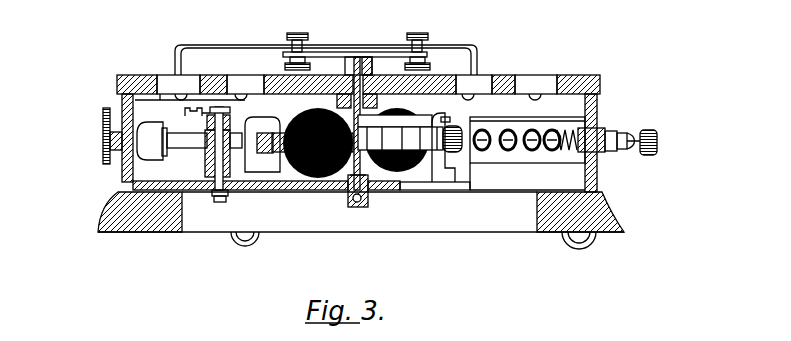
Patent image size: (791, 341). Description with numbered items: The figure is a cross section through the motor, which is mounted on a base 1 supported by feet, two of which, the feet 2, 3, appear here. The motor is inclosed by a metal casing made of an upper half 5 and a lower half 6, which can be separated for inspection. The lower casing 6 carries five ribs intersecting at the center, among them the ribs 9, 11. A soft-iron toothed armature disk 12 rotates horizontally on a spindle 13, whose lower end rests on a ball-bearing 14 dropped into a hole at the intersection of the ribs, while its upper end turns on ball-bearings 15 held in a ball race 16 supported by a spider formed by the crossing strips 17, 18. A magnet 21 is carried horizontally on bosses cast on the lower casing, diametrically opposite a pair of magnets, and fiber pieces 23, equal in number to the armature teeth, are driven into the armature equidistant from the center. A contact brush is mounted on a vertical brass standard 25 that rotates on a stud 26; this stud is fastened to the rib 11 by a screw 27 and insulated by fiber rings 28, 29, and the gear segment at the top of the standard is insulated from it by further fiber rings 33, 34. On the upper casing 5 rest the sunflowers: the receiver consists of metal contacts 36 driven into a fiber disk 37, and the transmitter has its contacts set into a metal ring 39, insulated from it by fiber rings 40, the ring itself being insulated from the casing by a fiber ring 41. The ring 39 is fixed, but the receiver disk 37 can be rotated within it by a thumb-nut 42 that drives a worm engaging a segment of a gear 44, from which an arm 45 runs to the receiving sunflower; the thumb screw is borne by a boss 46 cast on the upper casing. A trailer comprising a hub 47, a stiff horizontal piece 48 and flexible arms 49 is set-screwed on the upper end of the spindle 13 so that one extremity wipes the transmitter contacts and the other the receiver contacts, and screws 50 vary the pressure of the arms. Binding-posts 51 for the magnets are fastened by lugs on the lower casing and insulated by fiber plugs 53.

The base 1 is at (622, 216).
The foot 2 is at (262, 240).
The foot 3 is at (572, 245).
The upper casing half 5 is at (597, 103).
The lower casing half 6 is at (597, 180).
The rib 9 is at (490, 185).
The rib 11 is at (297, 190).
The toothed armature disk 12 is at (435, 143).
The spindle 13 is at (348, 178).
The ball-bearing 14 is at (355, 203).
The ball-bearings 15 is at (378, 103).
The ball race 16 is at (445, 115).
The strip 17 is at (447, 128).
The strip 18 is at (262, 138).
The magnet 21 is at (413, 160).
The fiber pieces 23 is at (264, 153).
The brass standard 25 is at (233, 186).
The stud 26 is at (206, 157).
The screw 27 is at (223, 200).
The fiber ring 28 is at (213, 196).
The fiber ring 29 is at (214, 188).
The fiber ring 33 is at (187, 110).
The fiber ring 34 is at (208, 123).
The metal contacts 36 is at (245, 76).
The fiber disk 37 is at (432, 77).
The metal ring 39 is at (153, 75).
The fiber rings 40 is at (162, 75).
The fiber ring 41 is at (127, 74).
The thumb-nut 42 is at (103, 124).
The segment of a gear 44 is at (185, 127).
The arm 45 is at (248, 110).
The boss 46 is at (122, 168).
The hub 47 is at (363, 70).
The stiff horizontal piece 48 is at (318, 52).
The flexible arms 49 is at (207, 45).
The screws 50 is at (298, 33).
The binding-posts 51 is at (657, 140).
The fiber plugs 53 is at (600, 130).